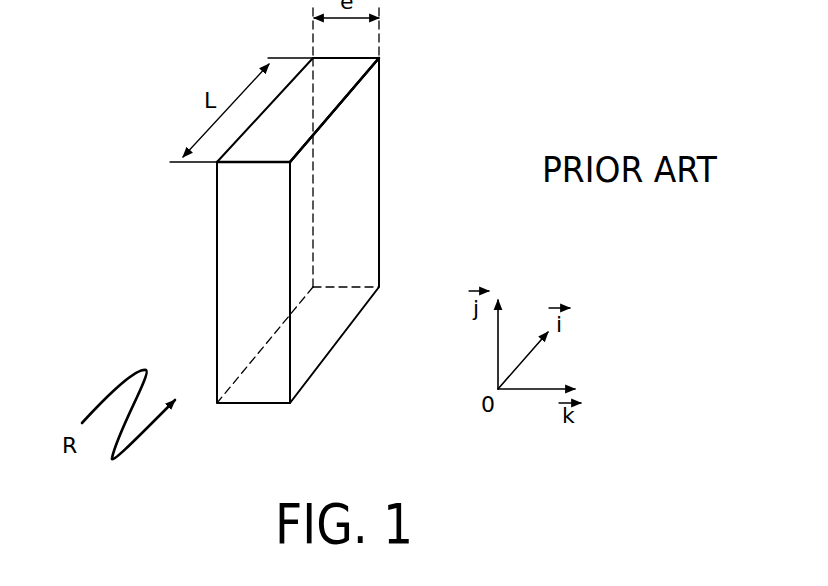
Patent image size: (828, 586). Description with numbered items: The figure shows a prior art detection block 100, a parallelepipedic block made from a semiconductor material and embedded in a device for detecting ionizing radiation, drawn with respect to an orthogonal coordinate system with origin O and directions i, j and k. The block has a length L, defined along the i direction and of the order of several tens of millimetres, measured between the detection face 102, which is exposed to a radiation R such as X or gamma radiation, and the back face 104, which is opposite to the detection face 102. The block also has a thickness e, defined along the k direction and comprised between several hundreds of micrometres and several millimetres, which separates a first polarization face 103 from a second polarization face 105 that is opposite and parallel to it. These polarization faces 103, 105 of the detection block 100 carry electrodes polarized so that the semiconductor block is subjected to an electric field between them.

The detection block 100 is at (231, 86).
The detection face 102 is at (243, 270).
The first polarization face 103 is at (243, 205).
The back face 104 is at (358, 143).
The second polarization face 105 is at (368, 210).